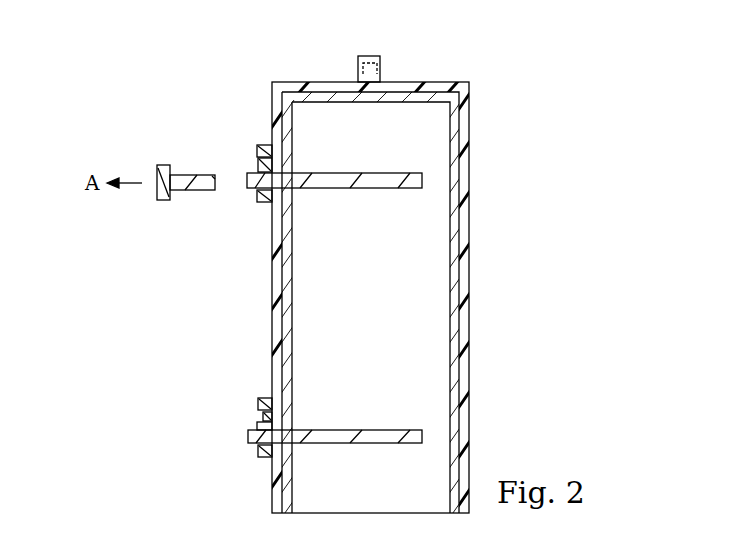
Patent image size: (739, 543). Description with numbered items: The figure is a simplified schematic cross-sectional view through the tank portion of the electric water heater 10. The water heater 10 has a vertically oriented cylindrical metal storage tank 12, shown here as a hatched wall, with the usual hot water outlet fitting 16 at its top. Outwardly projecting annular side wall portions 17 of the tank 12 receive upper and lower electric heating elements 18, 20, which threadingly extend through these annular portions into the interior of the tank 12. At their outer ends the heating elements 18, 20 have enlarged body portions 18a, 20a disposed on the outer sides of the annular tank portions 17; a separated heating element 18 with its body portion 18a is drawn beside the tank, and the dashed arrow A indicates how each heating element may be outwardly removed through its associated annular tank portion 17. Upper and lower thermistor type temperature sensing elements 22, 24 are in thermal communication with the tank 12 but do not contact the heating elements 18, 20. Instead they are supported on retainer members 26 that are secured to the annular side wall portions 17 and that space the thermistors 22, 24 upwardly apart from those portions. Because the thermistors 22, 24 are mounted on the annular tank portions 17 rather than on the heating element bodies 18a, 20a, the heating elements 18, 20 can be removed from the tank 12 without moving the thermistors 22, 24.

The water heater 10 is at (502, 124).
The storage tank 12 is at (470, 305).
The hot water outlet fitting 16 is at (380, 68).
The annular side wall portion 17 is at (262, 202).
The upper electric heating element 18 is at (374, 172).
The enlarged body portion 18a is at (146, 153).
The lower electric heating element 20 is at (360, 445).
The enlarged body portion 20a is at (249, 433).
The upper thermistor type temperature sensing element 22 is at (258, 147).
The lower thermistor type temperature sensing element 24 is at (258, 403).
The retainer member 26 is at (270, 159).